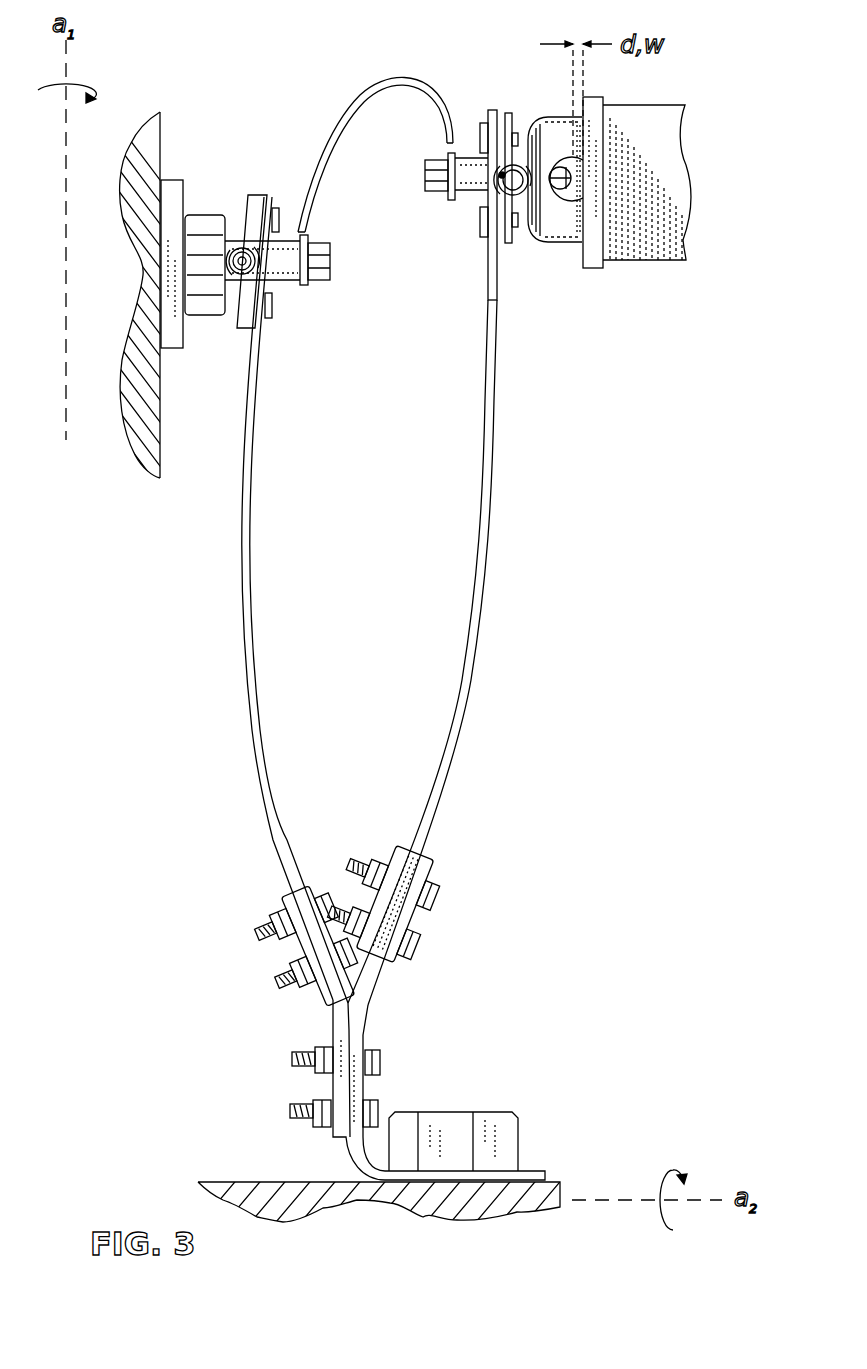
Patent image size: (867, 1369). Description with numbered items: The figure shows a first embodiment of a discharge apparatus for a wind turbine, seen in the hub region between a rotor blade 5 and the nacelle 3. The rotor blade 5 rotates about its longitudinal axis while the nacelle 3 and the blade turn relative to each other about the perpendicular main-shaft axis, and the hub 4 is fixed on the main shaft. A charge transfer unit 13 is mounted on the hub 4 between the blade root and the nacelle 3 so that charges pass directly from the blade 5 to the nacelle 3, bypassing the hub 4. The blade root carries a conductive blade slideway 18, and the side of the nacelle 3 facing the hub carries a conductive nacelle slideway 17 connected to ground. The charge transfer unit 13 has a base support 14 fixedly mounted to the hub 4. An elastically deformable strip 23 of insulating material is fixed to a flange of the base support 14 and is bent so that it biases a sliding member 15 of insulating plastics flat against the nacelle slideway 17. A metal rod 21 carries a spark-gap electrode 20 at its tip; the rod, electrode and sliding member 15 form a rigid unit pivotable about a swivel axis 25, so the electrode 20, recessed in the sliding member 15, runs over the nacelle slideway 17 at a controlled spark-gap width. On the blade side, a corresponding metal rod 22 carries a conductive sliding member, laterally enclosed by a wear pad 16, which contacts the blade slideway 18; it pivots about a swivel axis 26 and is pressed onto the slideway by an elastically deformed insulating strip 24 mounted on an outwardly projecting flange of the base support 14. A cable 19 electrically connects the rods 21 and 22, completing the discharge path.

The nacelle 3 is at (672, 187).
The hub 4 is at (248, 1180).
The rotor blade 5 is at (128, 342).
The charge transfer unit 13 is at (604, 509).
The base support 14 is at (370, 1020).
The sliding member 15 is at (562, 232).
The wear pad 16 is at (207, 310).
The nacelle slideway 17 is at (595, 270).
The blade slideway 18 is at (172, 192).
The cable 19 is at (391, 84).
The spark-gap electrode 20 is at (566, 180).
The metal rod 21 is at (485, 191).
The metal rod 22 is at (272, 283).
The elastically deformable strip 23 is at (470, 647).
The elastically deformed strip 24 is at (245, 613).
The swivel axis 25 is at (515, 192).
The swivel axis 26 is at (238, 282).